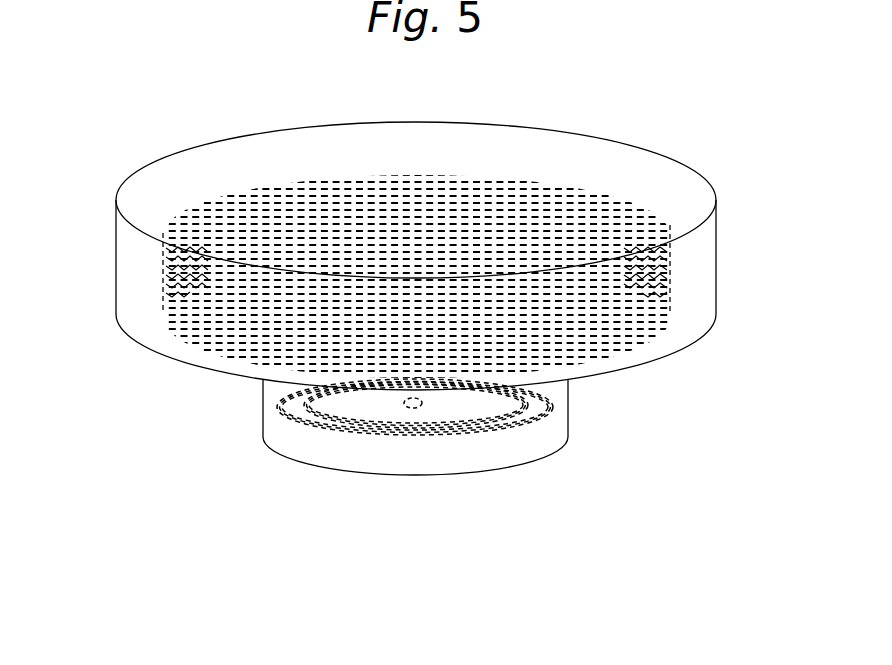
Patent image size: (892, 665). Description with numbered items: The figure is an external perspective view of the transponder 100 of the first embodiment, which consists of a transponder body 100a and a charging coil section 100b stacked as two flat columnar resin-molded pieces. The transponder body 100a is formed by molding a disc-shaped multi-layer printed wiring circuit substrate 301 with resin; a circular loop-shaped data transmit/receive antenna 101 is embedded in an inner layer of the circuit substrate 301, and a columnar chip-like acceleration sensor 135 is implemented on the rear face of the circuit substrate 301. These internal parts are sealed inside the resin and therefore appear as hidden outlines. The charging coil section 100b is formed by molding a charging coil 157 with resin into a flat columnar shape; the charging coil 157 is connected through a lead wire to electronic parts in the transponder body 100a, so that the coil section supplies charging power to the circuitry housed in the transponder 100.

The transponder 100 is at (405, 537).
The transponder body 100a is at (307, 463).
The charging coil section 100b is at (217, 142).
The charging coil 157 is at (548, 183).
The data transmit/receive antenna 101 is at (430, 406).
The multi-layer printed wiring circuit substrate 301 is at (278, 405).
The acceleration sensor 135 is at (527, 437).